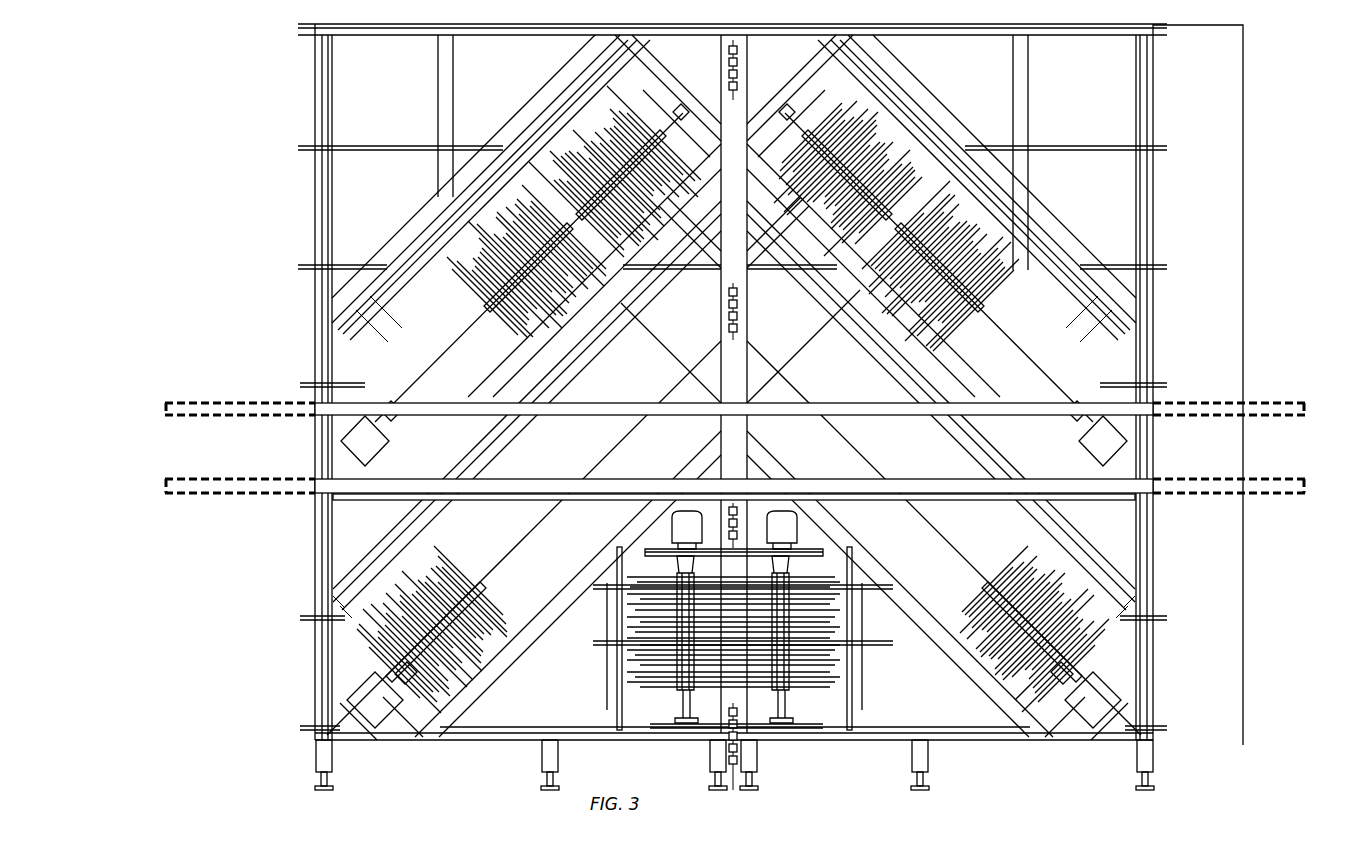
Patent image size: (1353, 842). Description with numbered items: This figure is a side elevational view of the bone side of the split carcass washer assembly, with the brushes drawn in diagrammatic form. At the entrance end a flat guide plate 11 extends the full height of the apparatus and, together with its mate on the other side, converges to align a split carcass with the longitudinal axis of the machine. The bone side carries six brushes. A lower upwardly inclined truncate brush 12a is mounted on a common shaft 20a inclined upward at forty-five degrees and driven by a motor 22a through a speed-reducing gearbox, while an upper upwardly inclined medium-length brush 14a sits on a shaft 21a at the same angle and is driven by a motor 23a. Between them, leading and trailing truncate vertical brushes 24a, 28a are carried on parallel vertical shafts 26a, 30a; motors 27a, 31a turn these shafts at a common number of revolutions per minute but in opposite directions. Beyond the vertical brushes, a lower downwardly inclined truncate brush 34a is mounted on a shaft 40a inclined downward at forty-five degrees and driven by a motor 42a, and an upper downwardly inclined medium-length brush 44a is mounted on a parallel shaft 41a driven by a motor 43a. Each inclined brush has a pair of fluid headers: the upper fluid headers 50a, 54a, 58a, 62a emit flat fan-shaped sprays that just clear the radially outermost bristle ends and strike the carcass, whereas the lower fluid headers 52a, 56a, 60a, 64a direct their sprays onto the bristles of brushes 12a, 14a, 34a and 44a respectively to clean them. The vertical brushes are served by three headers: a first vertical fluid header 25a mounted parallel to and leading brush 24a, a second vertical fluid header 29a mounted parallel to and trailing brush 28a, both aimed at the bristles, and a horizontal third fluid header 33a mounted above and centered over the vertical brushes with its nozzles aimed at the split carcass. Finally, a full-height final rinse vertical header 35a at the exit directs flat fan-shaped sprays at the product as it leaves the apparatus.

The flat guide plate 11 is at (1214, 125).
The lower bone-side brush 12a is at (964, 608).
The upper bone-side brush 14a is at (1000, 282).
The common shaft 20a is at (943, 533).
The shaft 21a is at (1023, 358).
The motor 22a is at (1113, 688).
The motor 23a is at (1110, 437).
The truncate vertical brush 24a is at (848, 686).
The first vertical fluid header 25a is at (850, 665).
The vertical shaft 26a is at (787, 710).
The motor 27a is at (797, 520).
The truncate vertical brush 28a is at (645, 692).
The second vertical fluid header 29a is at (615, 655).
The vertical shaft 30a is at (690, 692).
The motor 31a is at (677, 527).
The third fluid header 33a is at (652, 547).
The lower truncate downwardly inclined brush 34a is at (440, 560).
The final rinse vertical header 35a is at (318, 100).
The shaft 40a is at (610, 437).
The shaft 41a is at (478, 313).
The motor 42a is at (345, 693).
The motor 43a is at (356, 440).
The upper medium-length downwardly inclined brush 44a is at (535, 185).
The upper fluid header 50a is at (1107, 532).
The lower fluid header 52a is at (1113, 587).
The upper fluid header 54a is at (1040, 237).
The lower fluid header 56a is at (1108, 332).
The upper fluid header 58a is at (367, 551).
The lower fluid header 60a is at (358, 590).
The upper fluid header 62a is at (425, 235).
The lower fluid header 64a is at (423, 242).